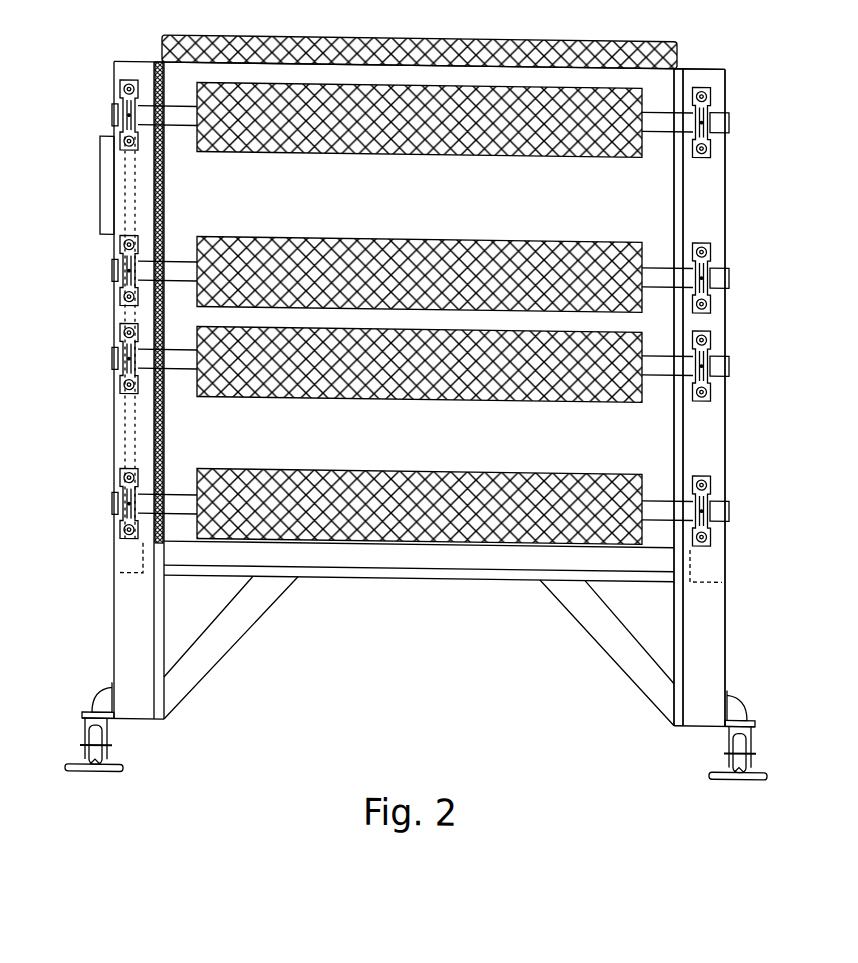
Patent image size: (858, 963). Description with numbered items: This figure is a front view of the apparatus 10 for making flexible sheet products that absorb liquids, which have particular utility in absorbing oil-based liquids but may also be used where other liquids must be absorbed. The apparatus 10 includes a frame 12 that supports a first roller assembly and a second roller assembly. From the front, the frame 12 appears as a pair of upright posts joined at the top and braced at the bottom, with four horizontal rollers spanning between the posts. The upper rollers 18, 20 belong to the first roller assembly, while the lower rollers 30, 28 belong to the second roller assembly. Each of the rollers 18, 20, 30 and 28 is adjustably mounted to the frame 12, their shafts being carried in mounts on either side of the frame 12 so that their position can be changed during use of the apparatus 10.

The apparatus 10 is at (766, 64).
The frame 12 is at (724, 430).
The roller 18 is at (332, 151).
The roller 20 is at (540, 235).
The roller 30 is at (327, 396).
The roller 28 is at (523, 468).